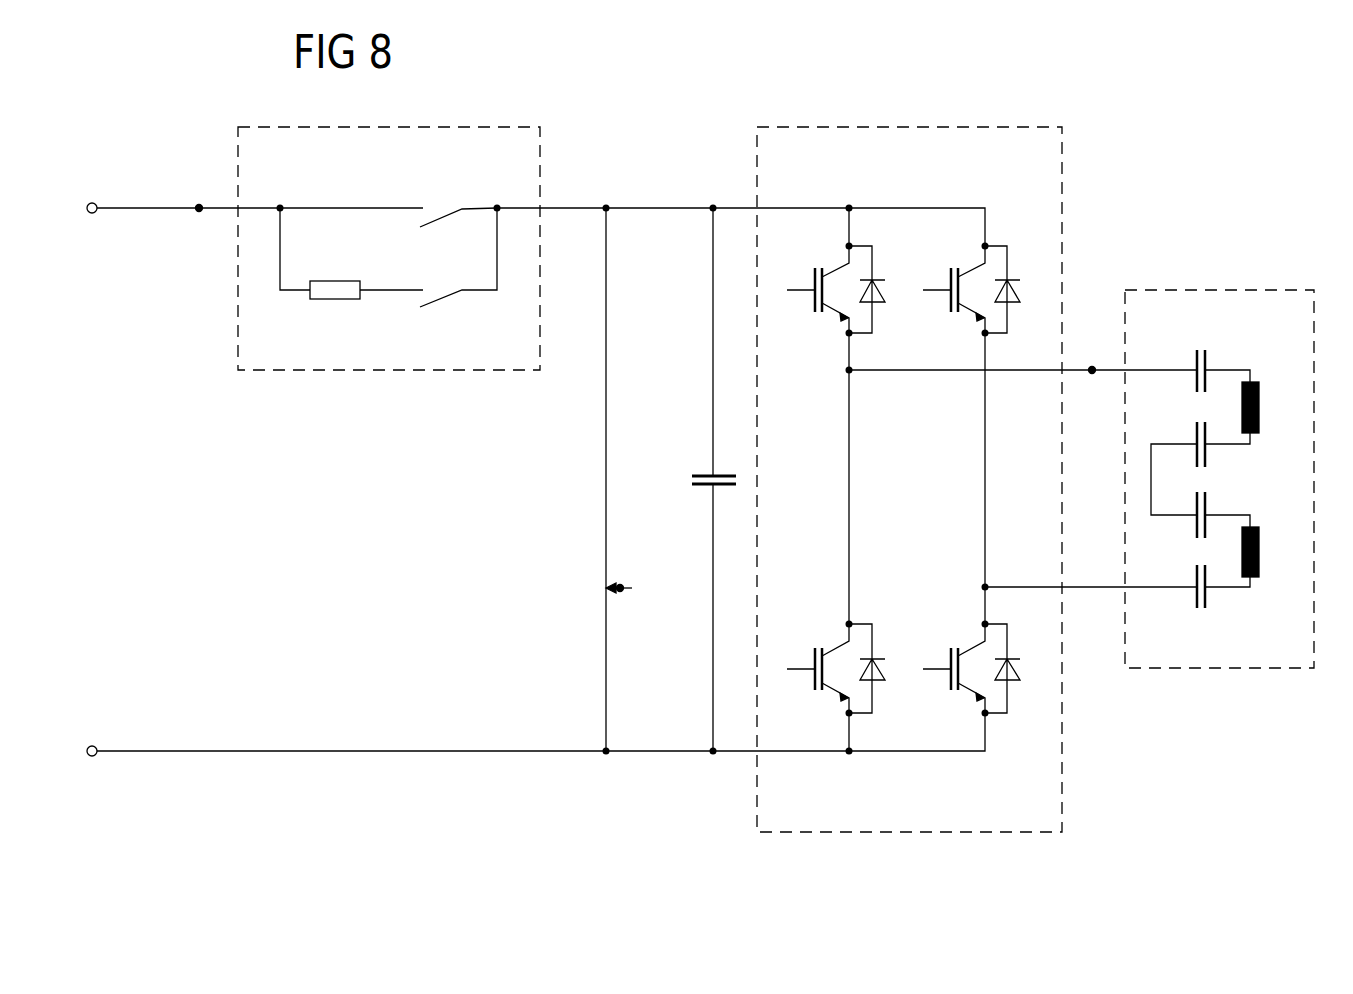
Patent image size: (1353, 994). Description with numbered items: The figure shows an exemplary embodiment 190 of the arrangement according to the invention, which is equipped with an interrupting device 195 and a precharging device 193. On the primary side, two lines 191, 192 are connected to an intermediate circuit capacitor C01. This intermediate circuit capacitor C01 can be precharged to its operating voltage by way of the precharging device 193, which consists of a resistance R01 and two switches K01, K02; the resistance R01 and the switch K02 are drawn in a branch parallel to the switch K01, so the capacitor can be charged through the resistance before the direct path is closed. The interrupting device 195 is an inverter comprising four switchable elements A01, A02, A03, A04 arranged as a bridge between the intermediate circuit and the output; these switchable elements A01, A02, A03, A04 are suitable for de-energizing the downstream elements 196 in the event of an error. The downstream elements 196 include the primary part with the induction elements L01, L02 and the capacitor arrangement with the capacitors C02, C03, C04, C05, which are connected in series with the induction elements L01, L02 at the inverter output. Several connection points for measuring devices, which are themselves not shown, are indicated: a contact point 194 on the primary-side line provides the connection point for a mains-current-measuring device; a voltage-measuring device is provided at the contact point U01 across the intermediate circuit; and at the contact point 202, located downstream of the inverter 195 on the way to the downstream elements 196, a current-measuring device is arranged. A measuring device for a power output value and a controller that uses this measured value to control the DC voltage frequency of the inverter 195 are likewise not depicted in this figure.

The exemplary embodiment of the arrangement 190 is at (1190, 178).
The line 191 is at (139, 207).
The line 192 is at (138, 753).
The precharging device 193 is at (543, 163).
The contact point 194 is at (199, 205).
The interrupting device (inverter) 195 is at (1063, 160).
The downstream elements 196 is at (1218, 670).
The contact point 202 is at (1092, 366).
The switch K01 is at (449, 207).
The switch K02 is at (448, 300).
The resistance R01 is at (335, 300).
The intermediate circuit capacitor C01 is at (702, 475).
The contact point U01 is at (606, 588).
The switchable element A01 is at (808, 276).
The switchable element A02 is at (808, 654).
The switchable element A03 is at (944, 276).
The switchable element A04 is at (944, 654).
The capacitor C02 is at (1196, 362).
The capacitor C03 is at (1196, 437).
The capacitor C04 is at (1196, 528).
The capacitor C05 is at (1196, 601).
The induction element L01 is at (1259, 396).
The induction element L02 is at (1259, 565).